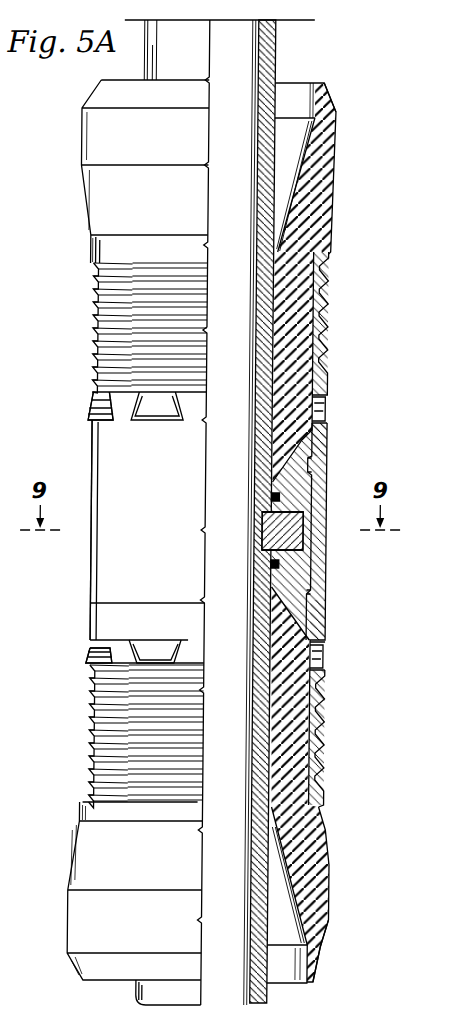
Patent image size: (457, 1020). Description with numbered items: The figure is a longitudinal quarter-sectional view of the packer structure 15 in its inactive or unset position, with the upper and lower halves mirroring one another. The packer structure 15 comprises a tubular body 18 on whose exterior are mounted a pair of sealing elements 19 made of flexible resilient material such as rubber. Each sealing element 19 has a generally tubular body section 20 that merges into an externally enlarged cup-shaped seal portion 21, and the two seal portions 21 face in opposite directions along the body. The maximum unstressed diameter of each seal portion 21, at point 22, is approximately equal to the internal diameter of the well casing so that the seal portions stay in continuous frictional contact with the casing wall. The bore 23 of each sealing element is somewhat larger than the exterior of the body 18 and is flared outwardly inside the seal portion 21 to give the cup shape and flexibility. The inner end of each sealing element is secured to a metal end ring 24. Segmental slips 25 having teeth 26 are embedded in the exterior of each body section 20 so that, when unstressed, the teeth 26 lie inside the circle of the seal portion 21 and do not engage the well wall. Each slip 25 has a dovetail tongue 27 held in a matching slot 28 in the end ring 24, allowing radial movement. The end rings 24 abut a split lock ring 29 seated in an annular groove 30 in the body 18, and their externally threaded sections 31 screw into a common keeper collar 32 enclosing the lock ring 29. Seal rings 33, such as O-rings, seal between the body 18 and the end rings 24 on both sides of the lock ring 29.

The packer structure 15 is at (281, 55).
The tubular body 18 is at (270, 73).
The sealing element 19 is at (328, 533).
The body section 20 is at (298, 348).
The cup-shaped seal portion 21 is at (338, 146).
The point of maximum unstressed diameter 22 is at (338, 126).
The bore 23 is at (280, 243).
The end ring 24 is at (322, 446).
The segmental slip 25 is at (100, 333).
The teeth 26 is at (100, 350).
The dovetail tongue 27 is at (95, 410).
The slot 28 is at (150, 424).
The split lock ring 29 is at (293, 522).
The annular groove 30 is at (268, 530).
The externally threaded section 31 is at (320, 476).
The keeper collar 32 is at (326, 558).
The seal ring 33 is at (275, 496).